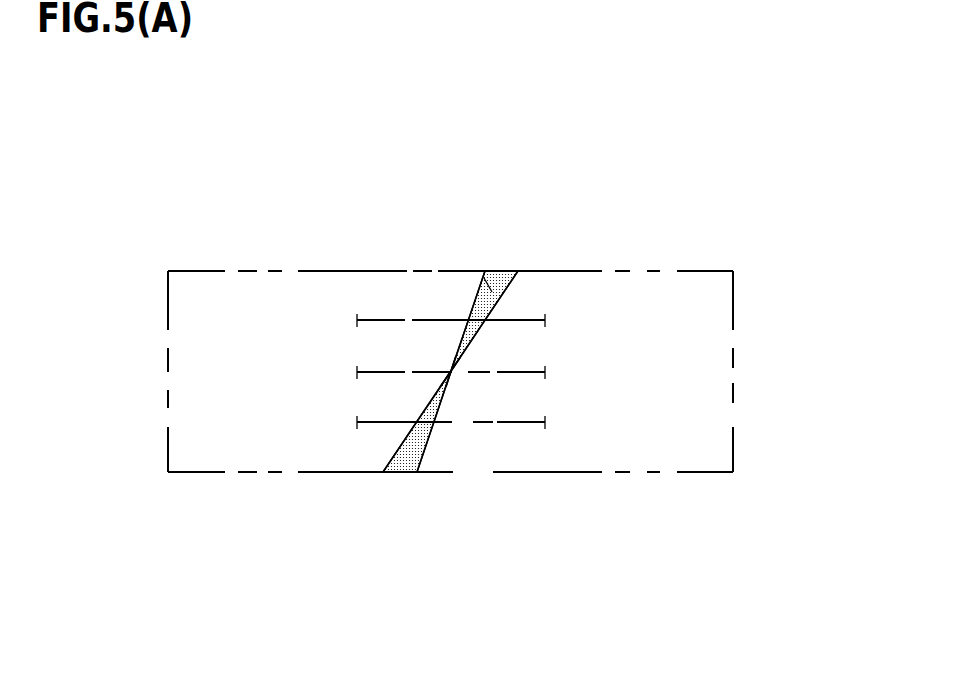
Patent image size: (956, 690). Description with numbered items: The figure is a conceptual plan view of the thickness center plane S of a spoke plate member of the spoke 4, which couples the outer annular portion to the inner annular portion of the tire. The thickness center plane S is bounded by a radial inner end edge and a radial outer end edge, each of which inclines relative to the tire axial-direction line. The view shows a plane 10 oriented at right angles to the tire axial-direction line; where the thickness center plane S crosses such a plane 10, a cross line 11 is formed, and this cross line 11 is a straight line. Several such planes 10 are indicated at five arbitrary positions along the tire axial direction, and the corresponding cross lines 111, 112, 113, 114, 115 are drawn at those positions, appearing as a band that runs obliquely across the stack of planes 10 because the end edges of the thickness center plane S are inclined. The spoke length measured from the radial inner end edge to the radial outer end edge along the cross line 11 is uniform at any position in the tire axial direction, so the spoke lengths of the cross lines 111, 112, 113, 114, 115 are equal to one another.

The spoke 4 is at (773, 214).
The plane 10 is at (392, 372).
The thickness center plane S is at (484, 278).
The cross line 11 is at (524, 380).
The cross line 111 is at (407, 485).
The cross line 112 is at (428, 430).
The cross line 113 is at (452, 375).
The cross line 114 is at (492, 307).
The cross line 115 is at (502, 271).